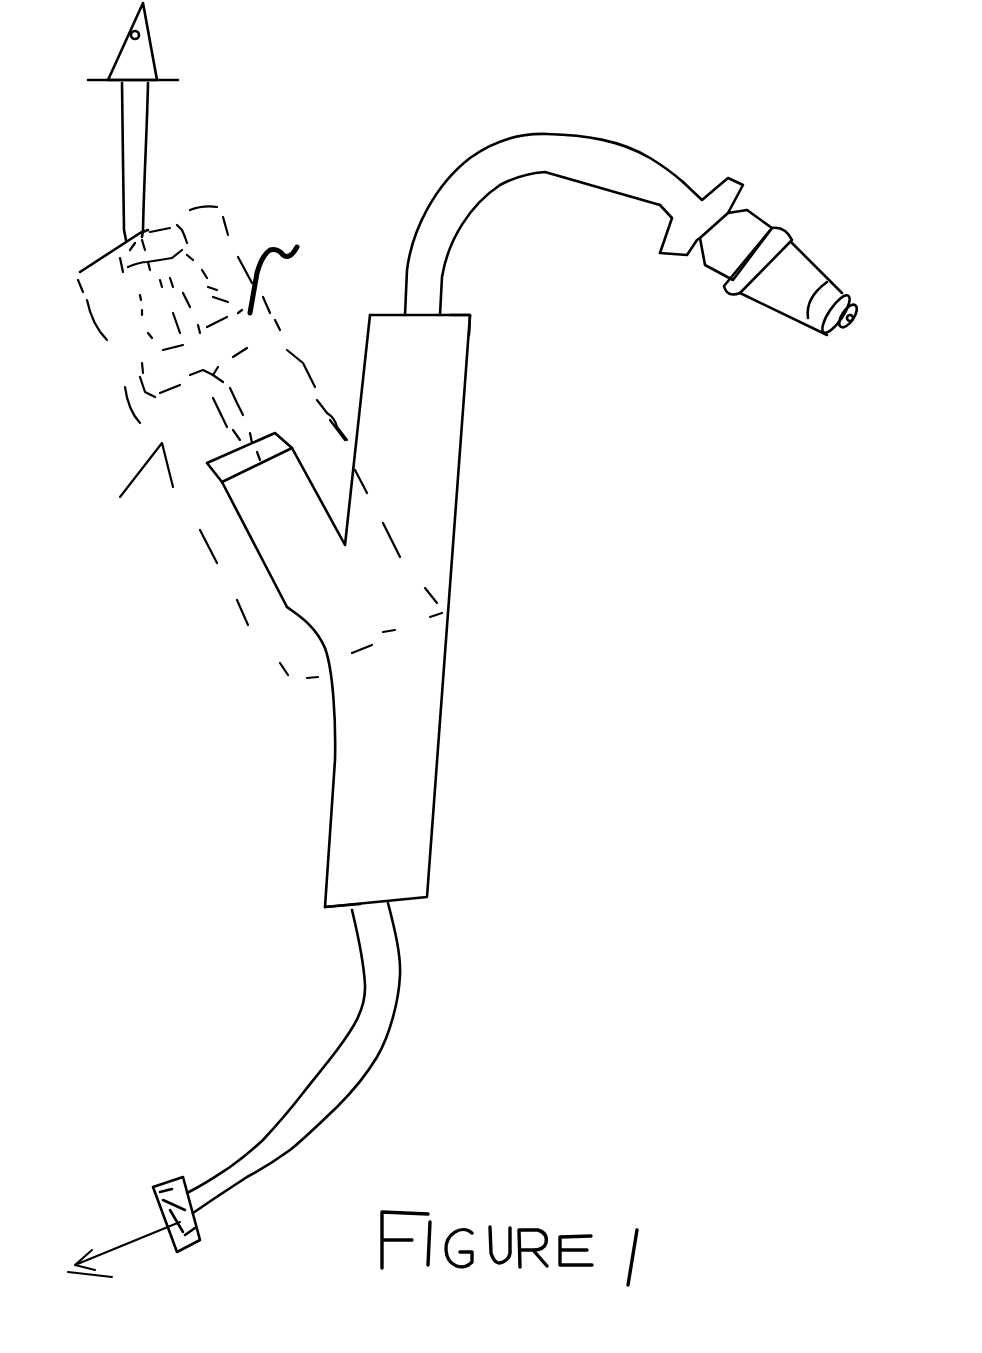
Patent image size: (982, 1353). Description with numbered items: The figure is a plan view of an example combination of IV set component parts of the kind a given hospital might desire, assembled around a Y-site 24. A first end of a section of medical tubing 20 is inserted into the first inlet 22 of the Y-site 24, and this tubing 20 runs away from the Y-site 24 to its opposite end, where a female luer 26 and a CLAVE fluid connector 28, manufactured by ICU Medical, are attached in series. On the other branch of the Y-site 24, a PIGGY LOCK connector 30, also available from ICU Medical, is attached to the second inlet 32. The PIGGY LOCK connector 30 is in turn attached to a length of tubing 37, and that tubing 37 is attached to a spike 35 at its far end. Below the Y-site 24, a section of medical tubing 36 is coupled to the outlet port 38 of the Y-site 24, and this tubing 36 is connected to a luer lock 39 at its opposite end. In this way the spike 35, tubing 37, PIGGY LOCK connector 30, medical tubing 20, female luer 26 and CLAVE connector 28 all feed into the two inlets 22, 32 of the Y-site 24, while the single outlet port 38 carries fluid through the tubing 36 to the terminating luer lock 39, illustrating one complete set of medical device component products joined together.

The medical tubing 20 is at (443, 242).
The first inlet 22 is at (470, 315).
The Y-site 24 is at (453, 617).
The female luer 26 is at (678, 235).
The CLAVE fluid connector 28 is at (773, 295).
The PIGGY LOCK connector 30 is at (260, 437).
The second inlet 32 is at (218, 480).
The spike 35 is at (142, 47).
The medical tubing 36 is at (353, 1068).
The tubing 37 is at (123, 163).
The outlet port 38 is at (323, 907).
The luer lock 39 is at (134, 1210).